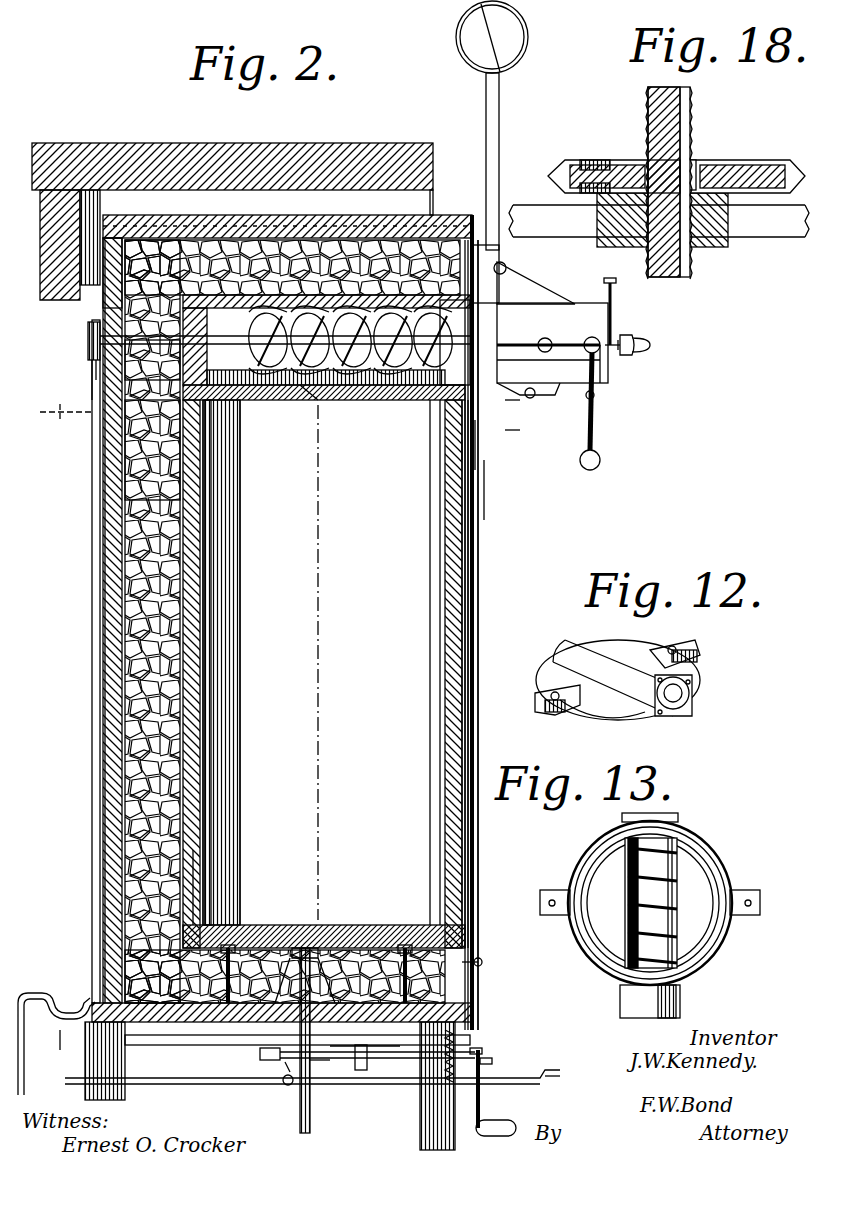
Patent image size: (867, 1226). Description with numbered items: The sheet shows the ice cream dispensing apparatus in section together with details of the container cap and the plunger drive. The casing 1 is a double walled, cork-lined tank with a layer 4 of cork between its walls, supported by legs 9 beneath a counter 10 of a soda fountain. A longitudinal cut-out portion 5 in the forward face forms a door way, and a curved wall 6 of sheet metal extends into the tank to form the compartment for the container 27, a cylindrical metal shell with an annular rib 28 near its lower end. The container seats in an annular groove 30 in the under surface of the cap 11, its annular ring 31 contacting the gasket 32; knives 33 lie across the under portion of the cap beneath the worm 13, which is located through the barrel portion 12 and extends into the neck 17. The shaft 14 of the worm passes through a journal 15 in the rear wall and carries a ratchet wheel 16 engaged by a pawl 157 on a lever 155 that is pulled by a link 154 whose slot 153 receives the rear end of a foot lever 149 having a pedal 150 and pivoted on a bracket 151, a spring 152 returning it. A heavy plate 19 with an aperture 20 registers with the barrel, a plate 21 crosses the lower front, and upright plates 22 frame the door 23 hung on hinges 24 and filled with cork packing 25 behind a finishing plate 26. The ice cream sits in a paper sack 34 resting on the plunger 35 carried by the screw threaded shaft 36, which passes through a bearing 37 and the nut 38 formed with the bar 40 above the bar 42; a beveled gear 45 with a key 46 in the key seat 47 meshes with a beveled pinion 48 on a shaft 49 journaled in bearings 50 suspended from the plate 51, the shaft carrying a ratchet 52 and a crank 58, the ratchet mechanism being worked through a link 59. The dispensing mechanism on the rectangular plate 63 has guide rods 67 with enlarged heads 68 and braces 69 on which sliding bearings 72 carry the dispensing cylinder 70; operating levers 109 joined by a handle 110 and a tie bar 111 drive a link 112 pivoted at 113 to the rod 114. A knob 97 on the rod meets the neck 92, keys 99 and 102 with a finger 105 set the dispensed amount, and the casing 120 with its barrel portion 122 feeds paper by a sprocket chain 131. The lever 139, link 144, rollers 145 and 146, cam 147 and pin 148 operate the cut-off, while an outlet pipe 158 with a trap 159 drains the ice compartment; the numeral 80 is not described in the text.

In FIG. 2, the casing 1 is at (92, 862).
In FIG. 2, the layer of cork 4 is at (530, 430).
In FIG. 2, the longitudinal cut-out portion 5 is at (470, 722).
In FIG. 2, the curved wall 6 is at (207, 535).
In FIG. 2, the legs 9 is at (128, 1050).
In FIG. 2, the counter 10 is at (368, 143).
In FIG. 2, the cap 11 is at (152, 360).
In FIG. 12, the cap 11 is at (630, 718).
In FIG. 13, the cap 11 is at (695, 890).
In FIG. 12, the barrel portion 12 is at (690, 690).
In FIG. 13, the barrel portion 12 is at (720, 962).
In FIG. 2, the worm 13 is at (318, 216).
In FIG. 2, the shaft 14 is at (148, 330).
In FIG. 2, the journal 15 is at (103, 300).
In FIG. 2, the ratchet wheel 16 is at (88, 340).
In FIG. 2, the neck 17 is at (430, 392).
In FIG. 12, the neck 17 is at (690, 670).
In FIG. 2, the plate 19 is at (440, 400).
In FIG. 2, the aperture 20 is at (470, 330).
In FIG. 2, the plate 21 is at (476, 980).
In FIG. 2, the upright plates 22 is at (470, 495).
In FIG. 2, the door 23 is at (468, 620).
In FIG. 2, the hinges 24 is at (505, 460).
In FIG. 2, the cork packing 25 is at (458, 540).
In FIG. 2, the plate 26 is at (480, 628).
In FIG. 2, the container 27 is at (207, 770).
In FIG. 2, the annular rib 28 is at (200, 880).
In FIG. 2, the annular groove 30 is at (365, 1042).
In FIG. 13, the annular groove 30 is at (700, 830).
In FIG. 2, the annular ring 31 is at (215, 432).
In FIG. 13, the annular ring 31 is at (700, 858).
In FIG. 2, the gasket 32 is at (425, 420).
In FIG. 13, the gasket 32 is at (735, 920).
In FIG. 2, the knives 33 is at (345, 380).
In FIG. 13, the knives 33 is at (672, 898).
In FIG. 2, the paper sack 34 is at (242, 625).
In FIG. 2, the plunger 35 is at (302, 940).
In FIG. 2, the screw threaded shaft 36 is at (335, 925).
In FIG. 18, the screw threaded shaft 36 is at (648, 140).
In FIG. 2, the bearing 37 is at (350, 950).
In FIG. 2, the nut 38 is at (232, 925).
In FIG. 2, the bar 40 is at (545, 270).
In FIG. 18, the bar 40 is at (578, 237).
In FIG. 2, the bar 42 is at (298, 1073).
In FIG. 2, the beveled gear 45 is at (340, 1105).
In FIG. 18, the beveled gear 45 is at (575, 165).
In FIG. 18, the key 46 is at (700, 160).
In FIG. 18, the key seat 47 is at (692, 118).
In FIG. 2, the beveled pinion 48 is at (334, 1099).
In FIG. 2, the shaft 49 is at (470, 1030).
In FIG. 2, the bearings 50 is at (462, 1050).
In FIG. 2, the plate 51 is at (225, 1032).
In FIG. 2, the ratchet 52 is at (368, 1070).
In FIG. 2, the crank 58 is at (484, 1098).
In FIG. 18, the link 59 is at (700, 250).
In FIG. 2, the rectangular plate 63 is at (480, 230).
In FIG. 2, the guide rods 67 is at (589, 333).
In FIG. 2, the enlarged head 68 is at (630, 378).
In FIG. 2, the brace 69 is at (598, 392).
In FIG. 2, the dispensing cylinder 70 is at (640, 330).
In FIG. 2, the sliding bearings 72 is at (548, 332).
In FIG. 2, the insulation fill 80 is at (152, 450).
In FIG. 2, the neck 92 is at (645, 355).
In FIG. 2, the knob 97 is at (652, 345).
In FIG. 2, the key 99 is at (618, 303).
In FIG. 2, the key 102 is at (616, 284).
In FIG. 2, the finger 105 is at (630, 338).
In FIG. 2, the operating levers 109 is at (598, 430).
In FIG. 2, the handle 110 is at (602, 460).
In FIG. 2, the tie bar 111 is at (598, 405).
In FIG. 2, the link 112 is at (551, 387).
In FIG. 2, the pivot 113 is at (523, 409).
In FIG. 2, the rod 114 is at (522, 432).
In FIG. 2, the casing 120 is at (500, 92).
In FIG. 2, the barrel portion 122 is at (528, 14).
In FIG. 2, the sprocket chain 131 is at (525, 290).
In FIG. 2, the lever 139 is at (465, 450).
In FIG. 2, the link 144 is at (480, 500).
In FIG. 2, the short roller 145 is at (493, 1135).
In FIG. 2, the longer roller 146 is at (492, 1062).
In FIG. 2, the cam 147 is at (482, 958).
In FIG. 2, the pin 148 is at (482, 962).
In FIG. 2, the foot lever 149 is at (280, 1086).
In FIG. 2, the pedal 150 is at (558, 1073).
In FIG. 2, the bracket 151 is at (282, 1058).
In FIG. 2, the spring 152 is at (485, 1050).
In FIG. 2, the slot 153 is at (78, 1078).
In FIG. 2, the link 154 is at (100, 884).
In FIG. 2, the lever 155 is at (90, 372).
In FIG. 2, the pawl 157 is at (90, 356).
In FIG. 2, the outlet pipe 158 is at (80, 995).
In FIG. 2, the trap 159 is at (52, 1030).